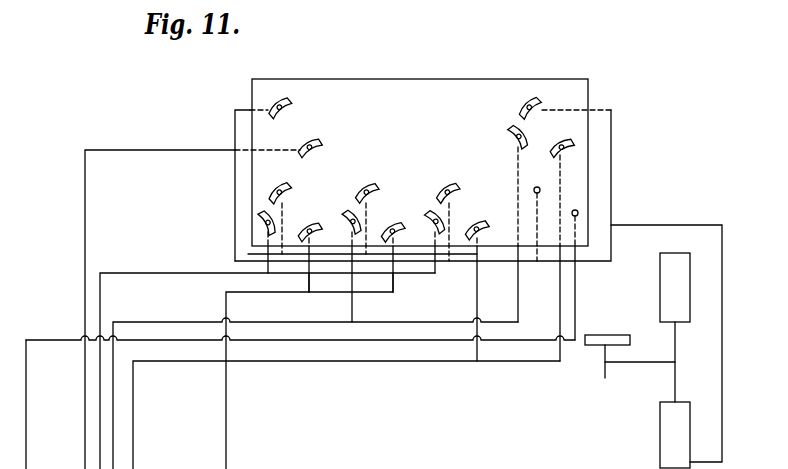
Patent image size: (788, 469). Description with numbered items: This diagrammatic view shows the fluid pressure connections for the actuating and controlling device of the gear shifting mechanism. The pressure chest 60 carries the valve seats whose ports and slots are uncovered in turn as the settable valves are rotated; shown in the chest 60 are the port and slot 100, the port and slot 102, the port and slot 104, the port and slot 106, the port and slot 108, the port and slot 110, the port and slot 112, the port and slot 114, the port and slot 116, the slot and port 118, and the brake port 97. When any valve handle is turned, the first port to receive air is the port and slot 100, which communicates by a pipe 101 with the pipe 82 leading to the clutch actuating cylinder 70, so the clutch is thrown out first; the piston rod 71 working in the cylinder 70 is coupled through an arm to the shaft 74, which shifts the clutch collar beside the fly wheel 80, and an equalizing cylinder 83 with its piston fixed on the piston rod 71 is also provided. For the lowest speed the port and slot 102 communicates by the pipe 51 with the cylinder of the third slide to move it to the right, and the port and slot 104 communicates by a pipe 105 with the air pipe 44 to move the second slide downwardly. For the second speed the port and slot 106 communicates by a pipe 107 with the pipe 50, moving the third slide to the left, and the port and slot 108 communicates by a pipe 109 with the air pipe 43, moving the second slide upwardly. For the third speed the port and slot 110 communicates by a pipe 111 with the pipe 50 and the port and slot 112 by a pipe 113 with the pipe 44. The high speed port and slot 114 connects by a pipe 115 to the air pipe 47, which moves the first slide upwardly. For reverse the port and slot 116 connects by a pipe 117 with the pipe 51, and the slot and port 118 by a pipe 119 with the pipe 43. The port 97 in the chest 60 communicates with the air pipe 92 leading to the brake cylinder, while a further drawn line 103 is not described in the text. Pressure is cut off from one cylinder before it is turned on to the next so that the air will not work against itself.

The chest 60 is at (428, 79).
The port and slot 100 is at (280, 106).
The pipe 101 is at (235, 130).
The port and slot 102 is at (484, 217).
The conductor 103 is at (479, 297).
The port and slot 104 is at (436, 226).
The pipe 105 is at (433, 255).
The port and slot 106 is at (393, 229).
The pipe 107 is at (393, 287).
The port and slot 108 is at (350, 220).
The pipe 109 is at (352, 286).
The port and slot 110 is at (310, 231).
The pipe 111 is at (309, 285).
The port and slot 112 is at (263, 223).
The pipe 113 is at (248, 256).
The port and slot 114 is at (314, 149).
The pipe 115 is at (185, 150).
The port and slot 116 is at (562, 152).
The pipe 117 is at (560, 298).
The slot and port 118 is at (514, 137).
The pipe 119 is at (518, 279).
The port 97 is at (579, 212).
The air pipe 92 is at (320, 340).
The air pipe 44 is at (186, 273).
The air pipe 43 is at (266, 322).
The pipe 50 is at (316, 293).
The pipe 51 is at (367, 361).
The air pipe 47 is at (56, 465).
The equalizing cylinder 83 is at (660, 290).
The piston rod 71 is at (677, 384).
The cylinder 70 is at (660, 436).
The pipe 82 is at (722, 447).
The fly wheel 80 is at (593, 337).
The shaft 74 is at (647, 362).